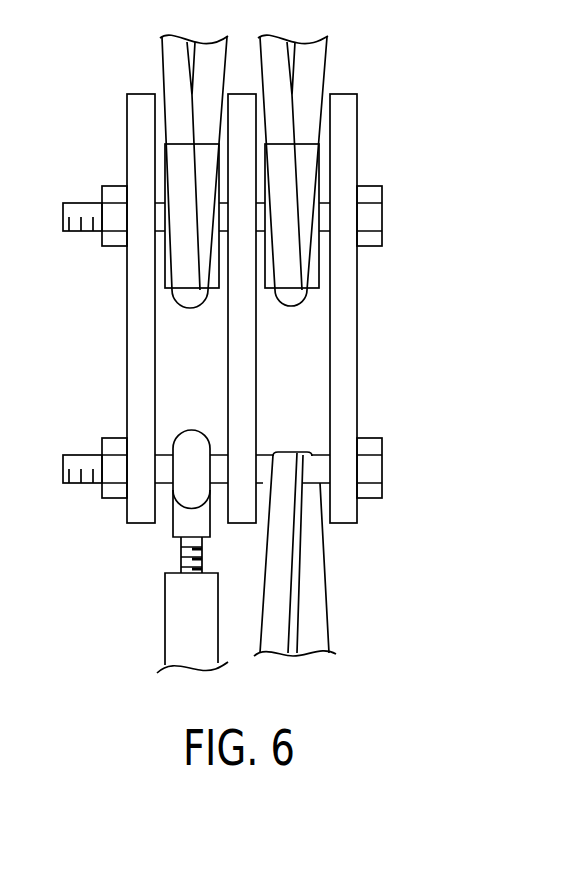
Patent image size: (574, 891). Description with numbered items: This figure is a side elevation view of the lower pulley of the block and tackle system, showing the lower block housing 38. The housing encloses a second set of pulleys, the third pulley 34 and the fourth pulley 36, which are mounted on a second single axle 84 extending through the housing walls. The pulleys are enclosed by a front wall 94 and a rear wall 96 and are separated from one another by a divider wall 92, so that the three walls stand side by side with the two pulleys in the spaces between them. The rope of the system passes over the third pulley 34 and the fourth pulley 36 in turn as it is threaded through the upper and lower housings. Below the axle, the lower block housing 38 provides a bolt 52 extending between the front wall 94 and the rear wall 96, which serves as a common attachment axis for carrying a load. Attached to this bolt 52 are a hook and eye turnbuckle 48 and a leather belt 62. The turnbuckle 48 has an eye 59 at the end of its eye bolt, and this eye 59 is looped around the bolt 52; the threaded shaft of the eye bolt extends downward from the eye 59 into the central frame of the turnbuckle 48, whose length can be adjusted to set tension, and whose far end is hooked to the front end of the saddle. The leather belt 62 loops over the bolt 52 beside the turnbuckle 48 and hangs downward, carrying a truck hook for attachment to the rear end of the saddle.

The lower block housing 38 is at (98, 103).
The rear wall 96 is at (133, 360).
The divider wall 92 is at (247, 374).
The front wall 94 is at (347, 420).
The second single axle 84 is at (358, 222).
The fourth pulley 36 is at (160, 296).
The third pulley 34 is at (324, 298).
The bolt 52 is at (373, 470).
The eye 59 is at (178, 530).
The hook and eye turnbuckle 48 is at (165, 620).
The leather belt 62 is at (320, 586).